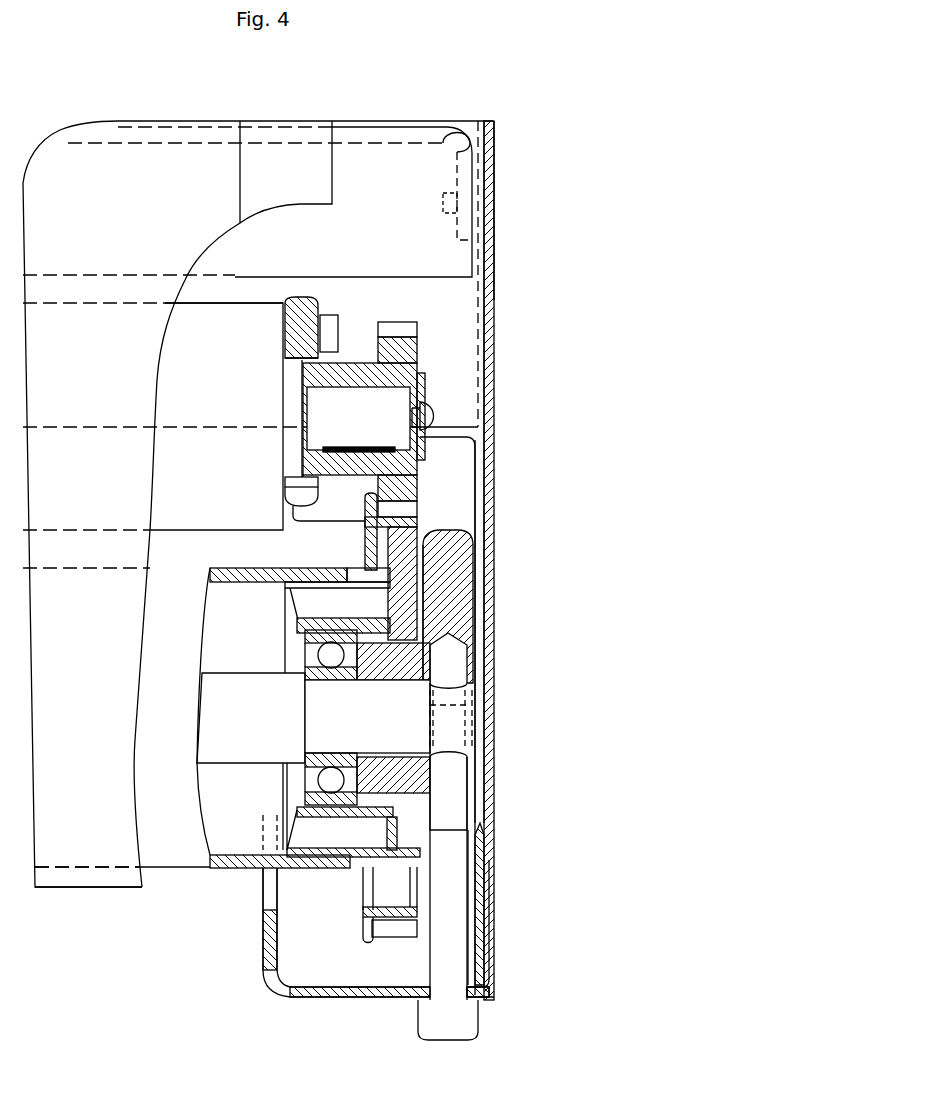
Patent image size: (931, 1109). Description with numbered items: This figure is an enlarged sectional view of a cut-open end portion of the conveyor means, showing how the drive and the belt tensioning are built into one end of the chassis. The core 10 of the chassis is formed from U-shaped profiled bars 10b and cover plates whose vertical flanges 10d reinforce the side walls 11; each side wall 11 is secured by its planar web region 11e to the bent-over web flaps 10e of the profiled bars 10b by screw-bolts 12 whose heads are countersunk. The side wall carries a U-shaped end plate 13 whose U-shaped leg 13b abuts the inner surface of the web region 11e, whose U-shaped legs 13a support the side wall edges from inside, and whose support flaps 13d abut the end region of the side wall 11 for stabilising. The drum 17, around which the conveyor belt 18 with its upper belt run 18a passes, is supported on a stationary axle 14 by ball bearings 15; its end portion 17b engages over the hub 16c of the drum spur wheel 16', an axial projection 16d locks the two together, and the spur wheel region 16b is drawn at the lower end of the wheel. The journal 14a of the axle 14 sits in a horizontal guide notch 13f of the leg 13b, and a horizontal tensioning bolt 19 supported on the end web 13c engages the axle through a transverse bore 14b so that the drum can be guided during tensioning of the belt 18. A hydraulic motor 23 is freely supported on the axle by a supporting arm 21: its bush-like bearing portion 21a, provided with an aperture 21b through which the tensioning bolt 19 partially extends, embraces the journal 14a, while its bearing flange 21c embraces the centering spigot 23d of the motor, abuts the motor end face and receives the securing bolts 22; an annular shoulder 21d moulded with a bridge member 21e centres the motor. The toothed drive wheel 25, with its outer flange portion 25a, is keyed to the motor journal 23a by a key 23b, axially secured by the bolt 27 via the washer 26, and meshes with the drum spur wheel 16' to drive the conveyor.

The core 10 is at (235, 282).
The profiled bars 10b is at (413, 126).
The vertical flanges 10d is at (482, 380).
The web flaps 10e is at (465, 230).
The side walls 11 is at (497, 167).
The web region 11e is at (495, 192).
The screw-bolts 12 is at (440, 196).
The end plates 13 is at (266, 996).
The U-shaped legs 13a is at (268, 946).
The U-shaped leg 13b is at (480, 912).
The end faces or webs 13c is at (377, 998).
The support flaps 13d is at (485, 995).
The horizontal guide notches 13f is at (480, 805).
The stationary axles 14 is at (240, 670).
The journals 14a is at (375, 724).
The transverse bores 14b is at (455, 695).
The ball bearings 15 is at (310, 798).
The drum spur wheel 16' is at (469, 939).
The lower bracket 16b is at (365, 933).
The hubs 16c is at (303, 568).
The axial projection 16d is at (365, 858).
The drums 17 is at (158, 840).
The end portions 17b is at (295, 868).
The conveyor belt 18 is at (63, 890).
The upper belt run 18a is at (110, 882).
The tensioning bolts 19 is at (452, 1022).
The supporting arm 21 is at (478, 610).
The bearing portion 21a is at (405, 778).
The aperture 21b is at (450, 660).
The bearing flange 21c is at (303, 318).
The annular shoulder 21d is at (300, 362).
The bridge member 21e is at (450, 575).
The securing screws or bolts 22 is at (328, 333).
The hydraulic motor 23 is at (216, 416).
The journal 23a is at (330, 407).
The key 23b is at (320, 450).
The centering projection or spigot 23d is at (290, 465).
The toothed drive wheel 25 is at (418, 357).
The flange end 25a is at (400, 328).
The washer or supporting disc 26 is at (425, 449).
The screw or bolt 27 is at (430, 415).